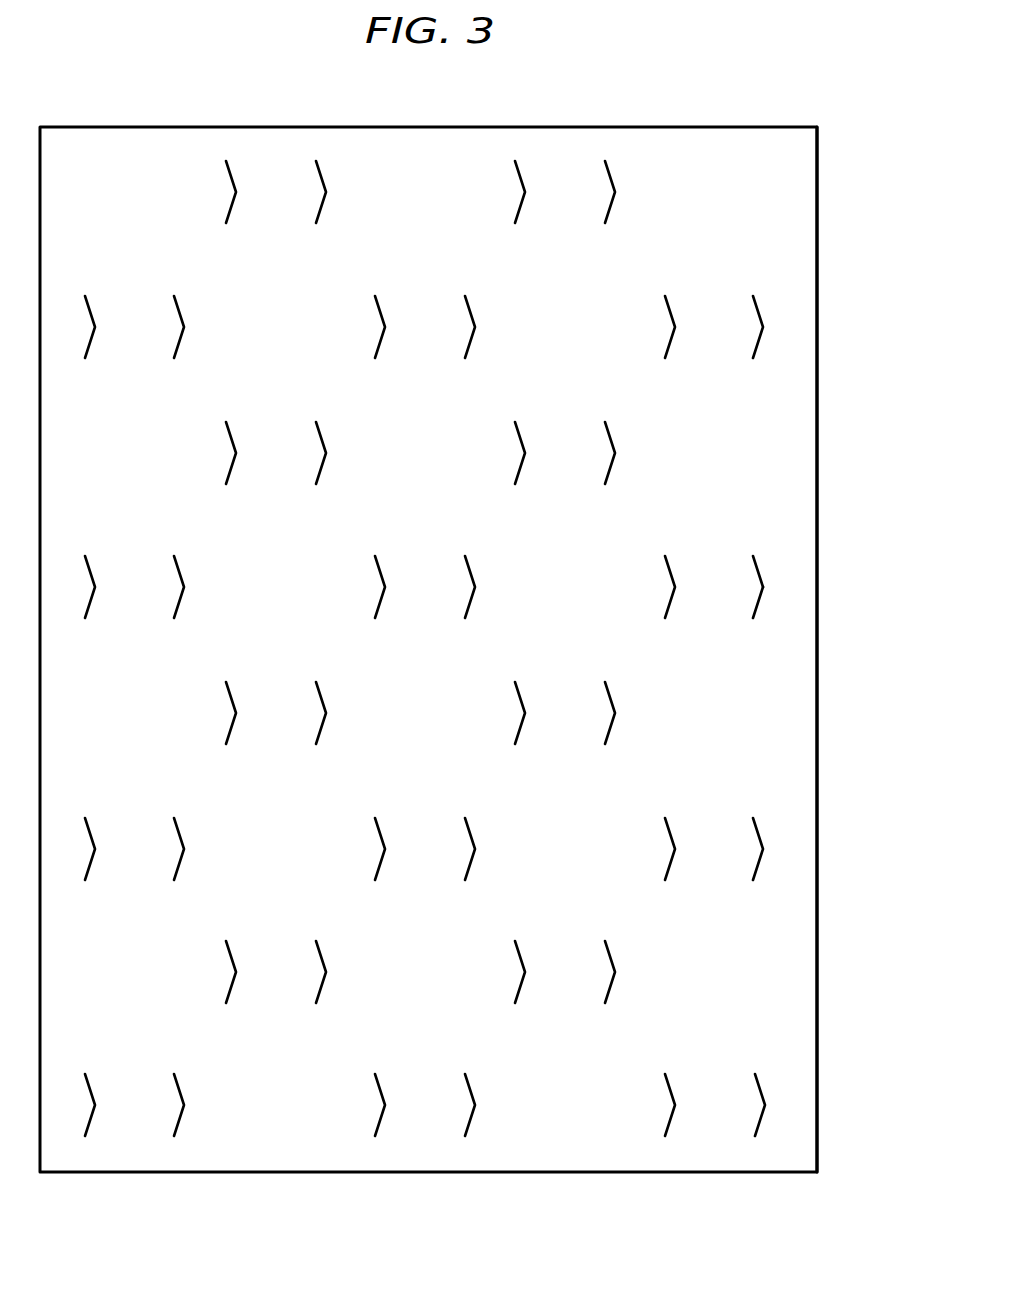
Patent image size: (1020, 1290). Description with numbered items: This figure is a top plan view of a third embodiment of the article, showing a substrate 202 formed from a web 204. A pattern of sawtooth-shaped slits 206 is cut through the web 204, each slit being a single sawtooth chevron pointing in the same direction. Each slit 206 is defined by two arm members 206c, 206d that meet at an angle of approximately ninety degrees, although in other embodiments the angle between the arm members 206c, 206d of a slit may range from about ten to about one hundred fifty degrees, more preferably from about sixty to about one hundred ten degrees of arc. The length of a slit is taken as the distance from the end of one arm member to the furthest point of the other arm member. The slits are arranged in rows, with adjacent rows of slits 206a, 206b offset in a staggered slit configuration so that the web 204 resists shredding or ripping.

The substrate 202 is at (728, 112).
The web 204 is at (803, 238).
The slit 206 is at (763, 325).
The slit 206a is at (615, 712).
The slit 206b is at (763, 848).
The arm member 206c is at (763, 580).
The arm member 206d is at (762, 600).